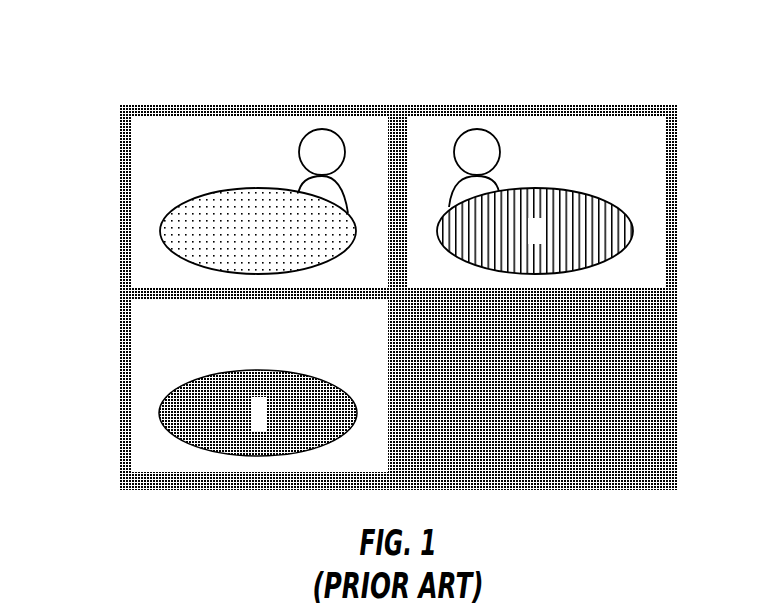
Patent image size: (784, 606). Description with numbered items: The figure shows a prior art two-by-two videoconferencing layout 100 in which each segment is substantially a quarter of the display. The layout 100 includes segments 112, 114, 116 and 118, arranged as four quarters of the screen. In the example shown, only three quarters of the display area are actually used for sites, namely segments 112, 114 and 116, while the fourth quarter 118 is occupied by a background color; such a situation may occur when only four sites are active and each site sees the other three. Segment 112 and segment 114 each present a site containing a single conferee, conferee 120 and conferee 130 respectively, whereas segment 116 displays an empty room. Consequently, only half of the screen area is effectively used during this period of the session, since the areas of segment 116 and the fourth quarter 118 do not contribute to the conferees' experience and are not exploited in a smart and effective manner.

The layout 100 is at (390, 275).
The segment 112 is at (270, 176).
The segment 114 is at (427, 297).
The segment 116 is at (219, 411).
The fourth quarter 118 is at (568, 386).
The conferee 120 is at (353, 143).
The conferee 130 is at (507, 144).